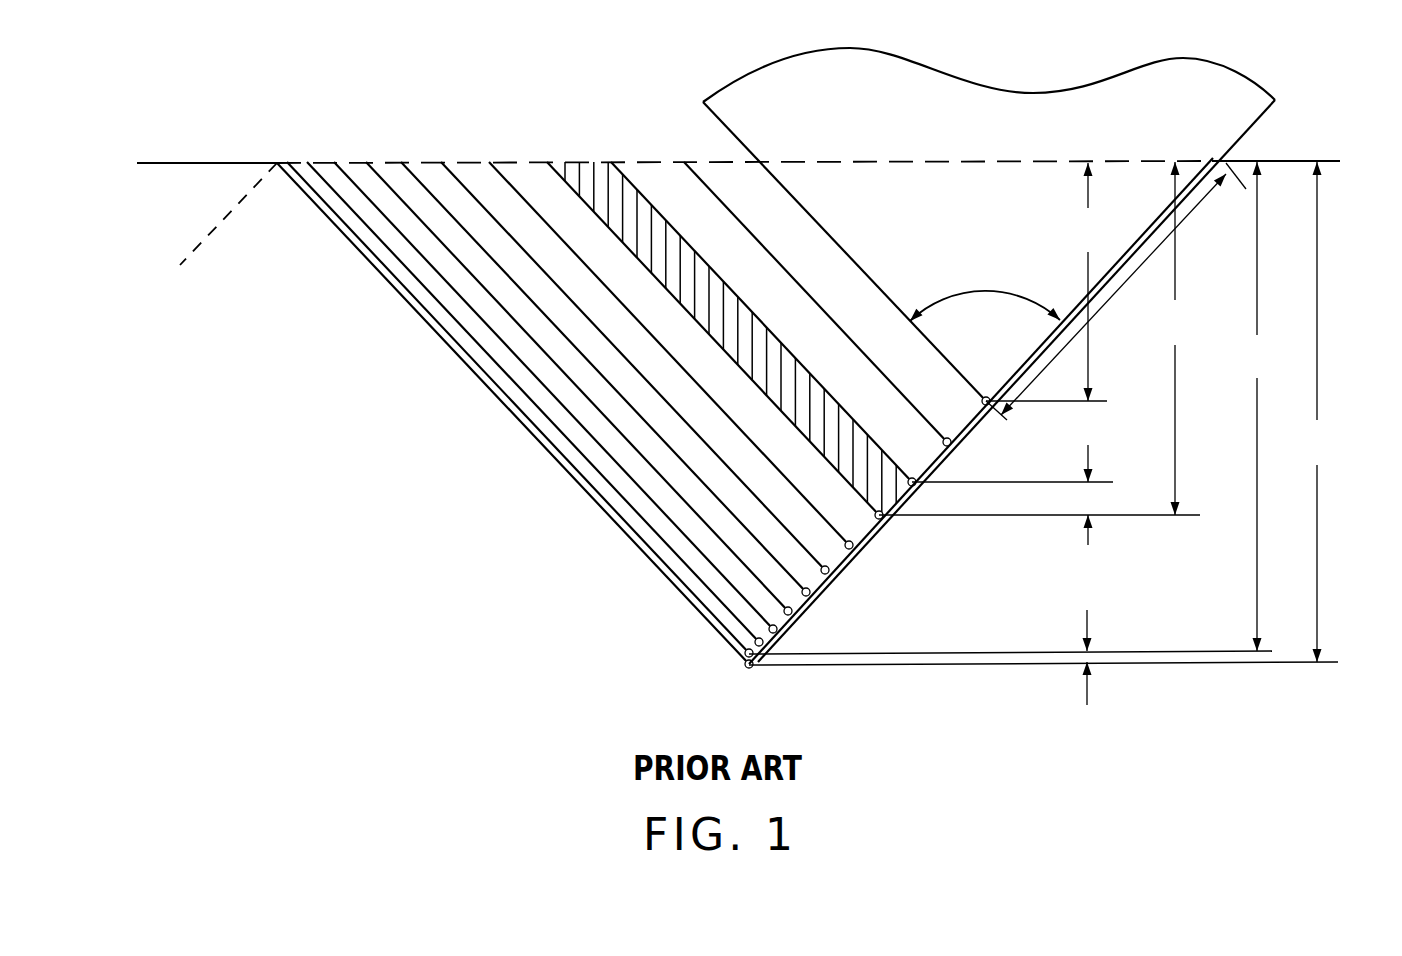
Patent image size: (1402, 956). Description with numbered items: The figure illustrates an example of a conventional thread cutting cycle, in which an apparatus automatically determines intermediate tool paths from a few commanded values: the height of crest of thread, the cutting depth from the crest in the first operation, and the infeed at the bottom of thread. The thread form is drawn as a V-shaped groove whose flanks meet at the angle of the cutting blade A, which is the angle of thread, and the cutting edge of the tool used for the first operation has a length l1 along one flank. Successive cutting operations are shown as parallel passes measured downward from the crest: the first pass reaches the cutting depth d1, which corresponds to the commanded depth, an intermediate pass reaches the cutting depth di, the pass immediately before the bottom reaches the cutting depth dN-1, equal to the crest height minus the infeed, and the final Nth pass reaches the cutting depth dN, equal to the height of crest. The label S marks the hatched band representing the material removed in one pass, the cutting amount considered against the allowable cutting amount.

The surface of test piece S is at (586, 162).
The angle of the cutting blade A is at (985, 289).
The length of the cutting edge for the first thread cutting operation l1 is at (1116, 291).
The cutting depth in the first cutting operation d1 is at (1091, 282).
The cutting depth in each cutting operation di is at (1169, 338).
The cutting depth in the thread cutting operation immediately before the bottom-of-t dN-1 is at (1249, 406).
The cutting depth in the Nth cutting operation dN is at (1312, 412).